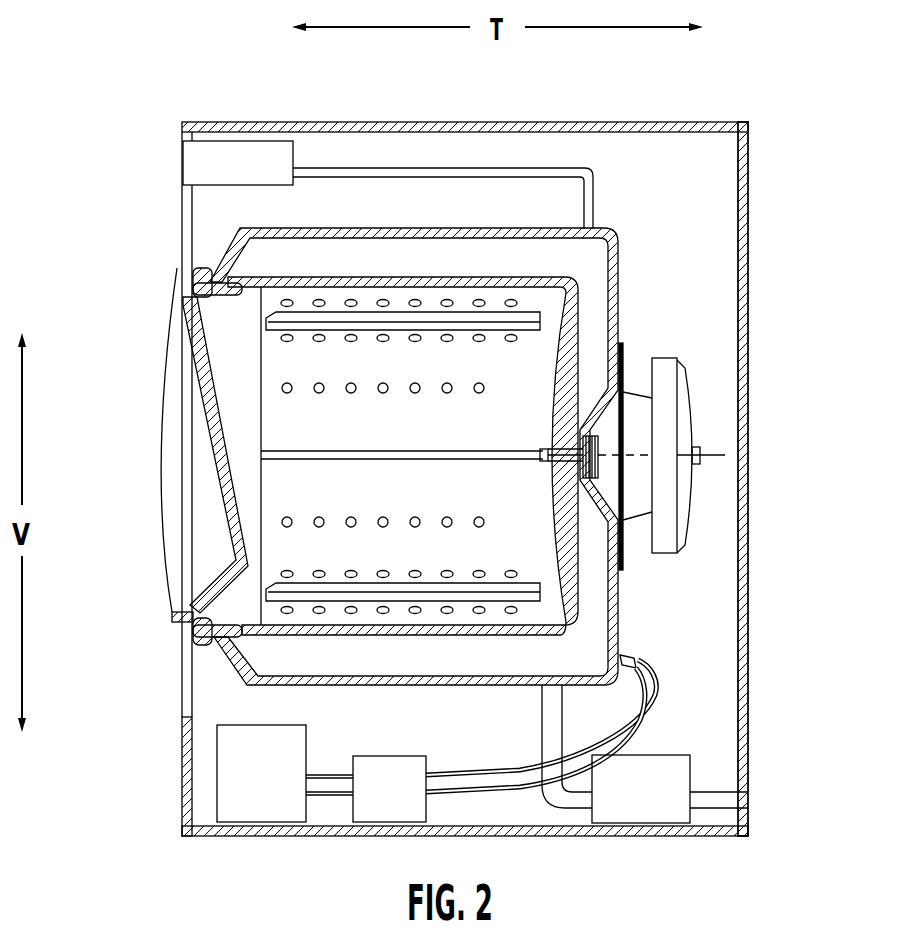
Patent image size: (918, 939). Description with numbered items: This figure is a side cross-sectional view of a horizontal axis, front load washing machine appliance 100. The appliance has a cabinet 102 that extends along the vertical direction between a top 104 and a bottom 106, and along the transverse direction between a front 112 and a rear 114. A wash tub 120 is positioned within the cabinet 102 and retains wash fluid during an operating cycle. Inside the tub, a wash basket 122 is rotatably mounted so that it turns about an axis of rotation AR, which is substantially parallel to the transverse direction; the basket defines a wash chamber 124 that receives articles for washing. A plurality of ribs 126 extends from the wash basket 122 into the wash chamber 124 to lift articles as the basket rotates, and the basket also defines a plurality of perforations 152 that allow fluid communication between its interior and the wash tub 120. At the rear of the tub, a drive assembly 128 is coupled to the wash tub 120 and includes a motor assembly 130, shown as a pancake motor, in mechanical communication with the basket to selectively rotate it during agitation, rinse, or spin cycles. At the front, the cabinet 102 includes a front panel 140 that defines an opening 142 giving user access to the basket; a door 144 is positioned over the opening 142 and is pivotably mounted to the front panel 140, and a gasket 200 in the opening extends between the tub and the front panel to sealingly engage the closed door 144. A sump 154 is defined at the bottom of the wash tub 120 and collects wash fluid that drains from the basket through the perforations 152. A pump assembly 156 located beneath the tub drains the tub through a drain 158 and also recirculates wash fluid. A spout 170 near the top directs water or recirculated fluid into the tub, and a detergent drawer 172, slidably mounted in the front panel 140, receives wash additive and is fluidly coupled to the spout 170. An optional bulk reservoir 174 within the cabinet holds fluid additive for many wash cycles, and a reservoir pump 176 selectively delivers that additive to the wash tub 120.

The washing machine appliance 100 is at (185, 58).
The cabinet 102 is at (750, 463).
The top 104 is at (763, 120).
The bottom 106 is at (777, 808).
The front 112 is at (172, 122).
The rear 114 is at (758, 283).
The wash tub 120 is at (612, 298).
The wash basket 122 is at (346, 280).
The wash chamber 124 is at (230, 404).
The ribs 126 is at (340, 451).
The drive assembly 128 is at (706, 416).
The motor assembly 130 is at (665, 385).
The front panel 140 is at (190, 655).
The opening 142 is at (205, 309).
The door 144 is at (166, 520).
The perforations 152 is at (448, 394).
The sump 154 is at (592, 646).
The pump assembly 156 is at (670, 789).
The drain 158 is at (533, 692).
The spout 170 is at (593, 200).
The detergent drawer 172 is at (240, 158).
The bulk reservoir 174 is at (237, 765).
The reservoir pump 176 is at (394, 775).
The gasket 200 is at (172, 611).
The axis of rotation AR is at (714, 455).